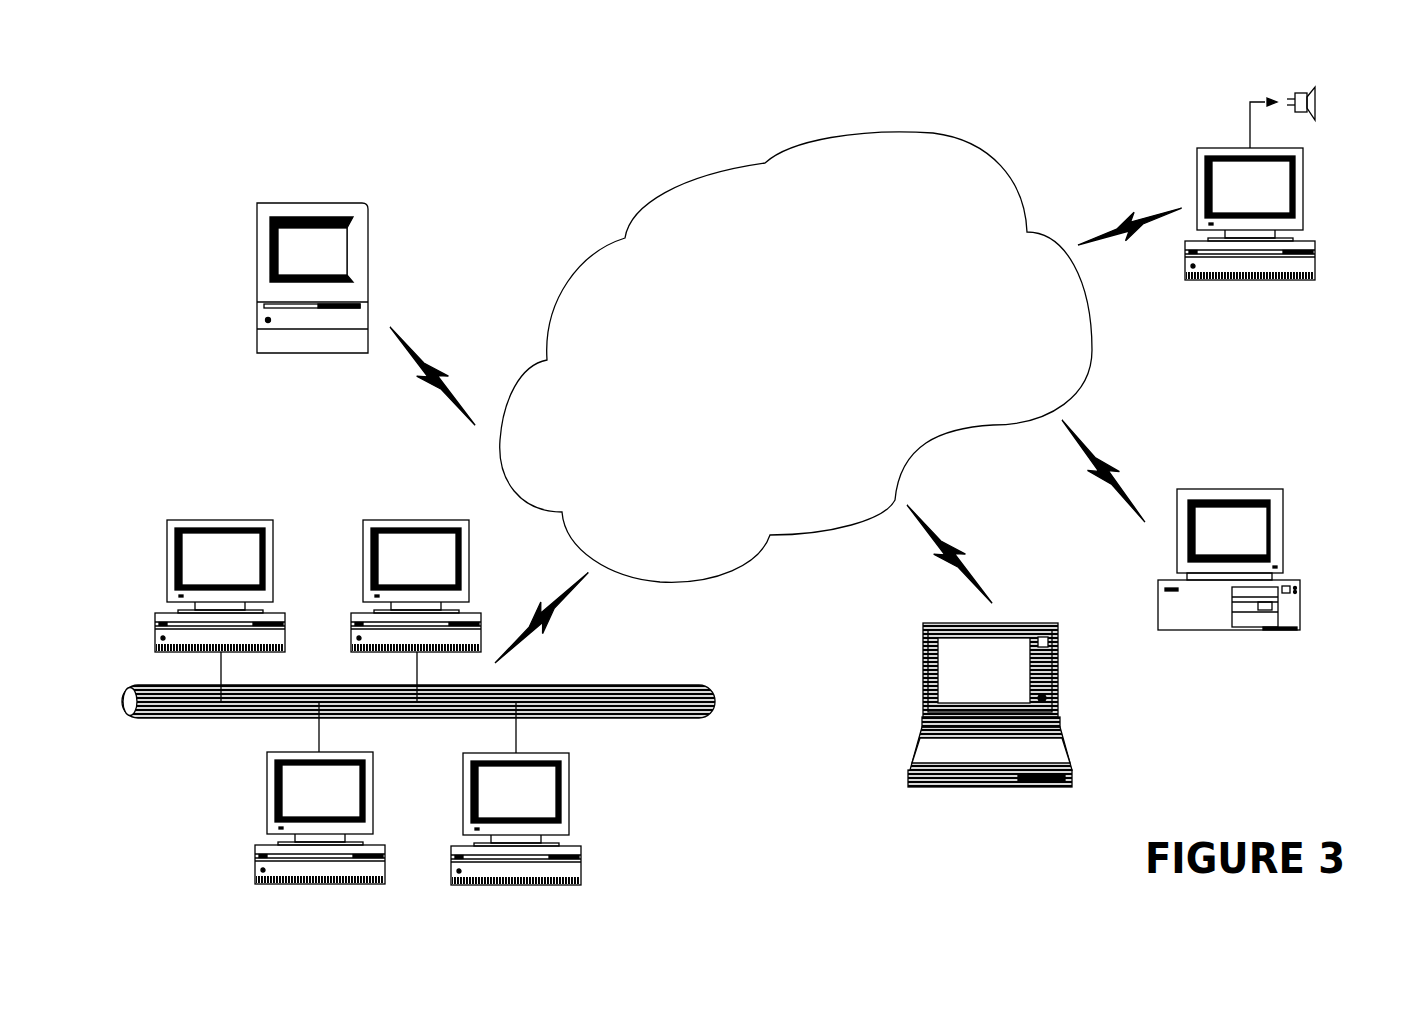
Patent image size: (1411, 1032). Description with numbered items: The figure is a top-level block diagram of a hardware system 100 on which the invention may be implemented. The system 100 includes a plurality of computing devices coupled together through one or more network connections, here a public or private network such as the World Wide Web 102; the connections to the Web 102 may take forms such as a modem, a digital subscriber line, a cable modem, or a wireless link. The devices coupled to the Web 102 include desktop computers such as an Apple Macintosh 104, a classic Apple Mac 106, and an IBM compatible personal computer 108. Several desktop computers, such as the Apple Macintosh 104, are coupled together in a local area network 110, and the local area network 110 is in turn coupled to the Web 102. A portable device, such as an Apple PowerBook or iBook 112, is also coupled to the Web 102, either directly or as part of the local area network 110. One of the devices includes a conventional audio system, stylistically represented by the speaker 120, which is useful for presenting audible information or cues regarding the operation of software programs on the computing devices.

The system 100 is at (543, 177).
The World Wide Web 102 is at (797, 374).
The Apple Macintosh 104 is at (167, 560).
The classic Apple Mac 106 is at (252, 300).
The IBM compatible personal computer 108 is at (1283, 533).
The local area network 110 is at (590, 672).
The Apple PowerBook or iBook 112 is at (920, 690).
The speaker 120 is at (1333, 67).